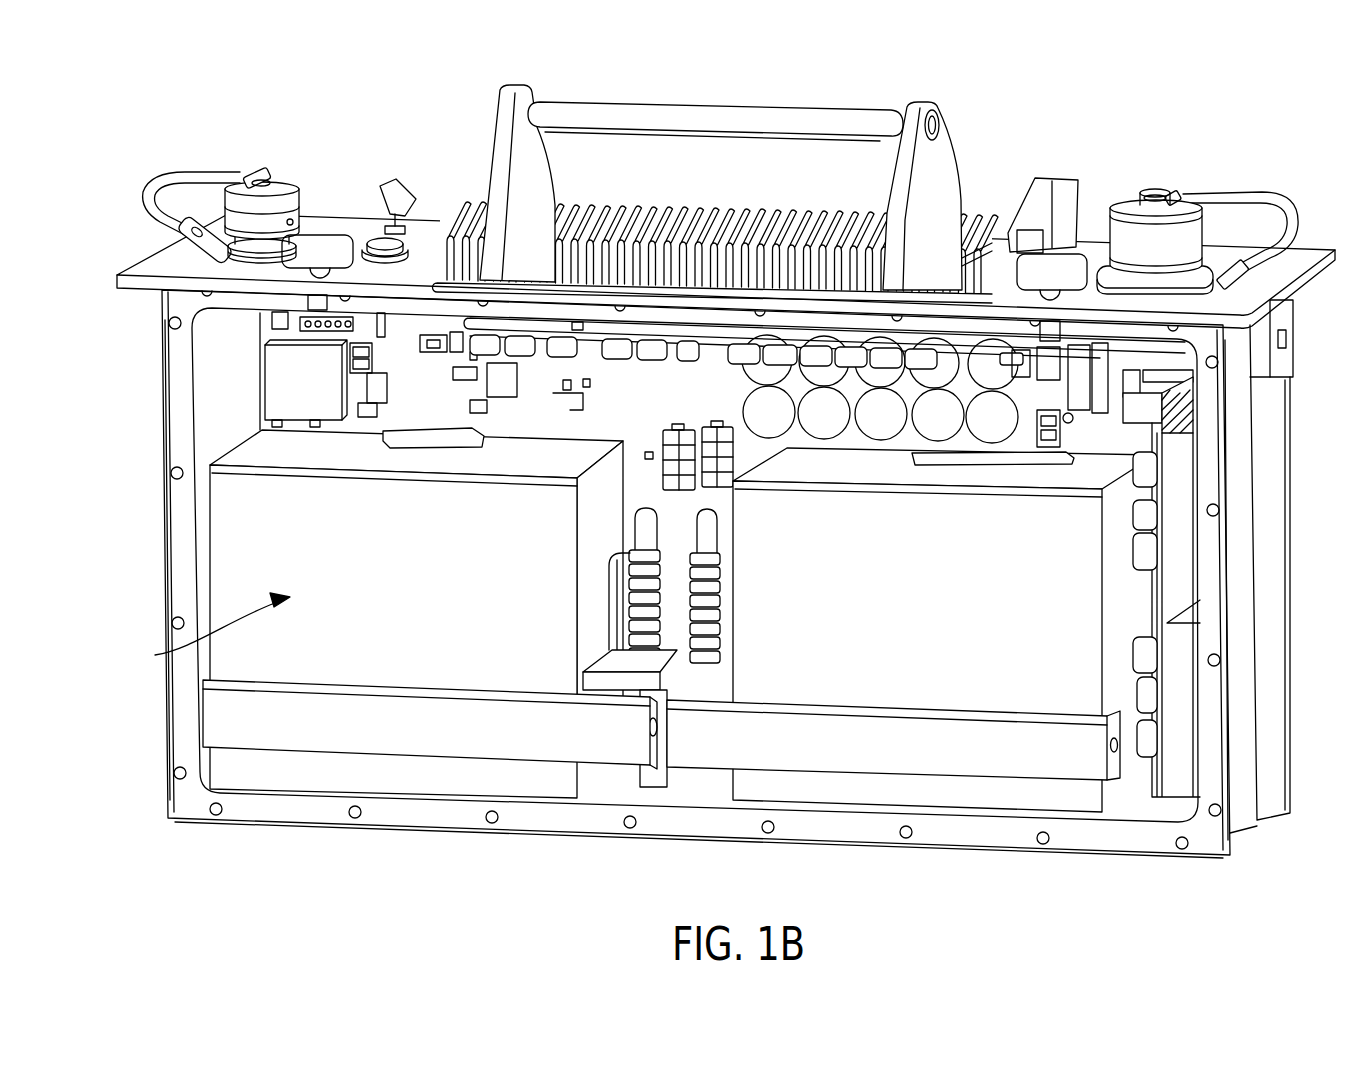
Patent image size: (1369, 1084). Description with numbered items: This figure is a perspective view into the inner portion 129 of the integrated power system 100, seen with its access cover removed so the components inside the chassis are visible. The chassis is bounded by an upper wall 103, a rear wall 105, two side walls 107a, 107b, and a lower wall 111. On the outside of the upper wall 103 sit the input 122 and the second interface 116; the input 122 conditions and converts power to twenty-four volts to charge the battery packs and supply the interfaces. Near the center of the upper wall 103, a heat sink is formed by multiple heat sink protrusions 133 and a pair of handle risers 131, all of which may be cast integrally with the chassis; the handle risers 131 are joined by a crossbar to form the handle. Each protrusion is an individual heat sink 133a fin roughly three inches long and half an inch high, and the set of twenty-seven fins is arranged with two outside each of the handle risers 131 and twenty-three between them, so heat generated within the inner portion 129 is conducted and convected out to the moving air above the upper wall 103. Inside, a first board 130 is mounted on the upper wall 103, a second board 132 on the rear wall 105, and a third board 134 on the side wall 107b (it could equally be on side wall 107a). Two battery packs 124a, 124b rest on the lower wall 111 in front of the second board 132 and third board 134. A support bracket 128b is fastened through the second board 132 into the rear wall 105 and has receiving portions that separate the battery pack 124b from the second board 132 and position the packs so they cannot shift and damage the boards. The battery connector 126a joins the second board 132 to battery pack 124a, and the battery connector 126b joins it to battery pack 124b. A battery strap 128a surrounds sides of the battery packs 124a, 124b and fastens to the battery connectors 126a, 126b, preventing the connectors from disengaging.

The system 100 is at (106, 121).
The upper wall 103 is at (163, 253).
The rear wall 105 is at (1288, 680).
The side wall 107a is at (165, 732).
The side wall 107b is at (1242, 805).
The lower wall 111 is at (1065, 850).
The second interface 116 is at (262, 152).
The input 122 is at (1158, 166).
The battery pack 124a is at (300, 773).
The battery pack 124b is at (872, 782).
The battery connector 126a is at (615, 780).
The battery connector 126b is at (698, 780).
The battery strap 128a is at (435, 722).
The support bracket 128b is at (477, 437).
The inner portion 129 is at (204, 635).
The first board 130 is at (437, 336).
The handle risers 131 is at (897, 213).
The second board 132 is at (360, 382).
The heat sink protrusions 133 is at (680, 302).
The heat sink 133a is at (957, 213).
The third board 134 is at (1160, 535).